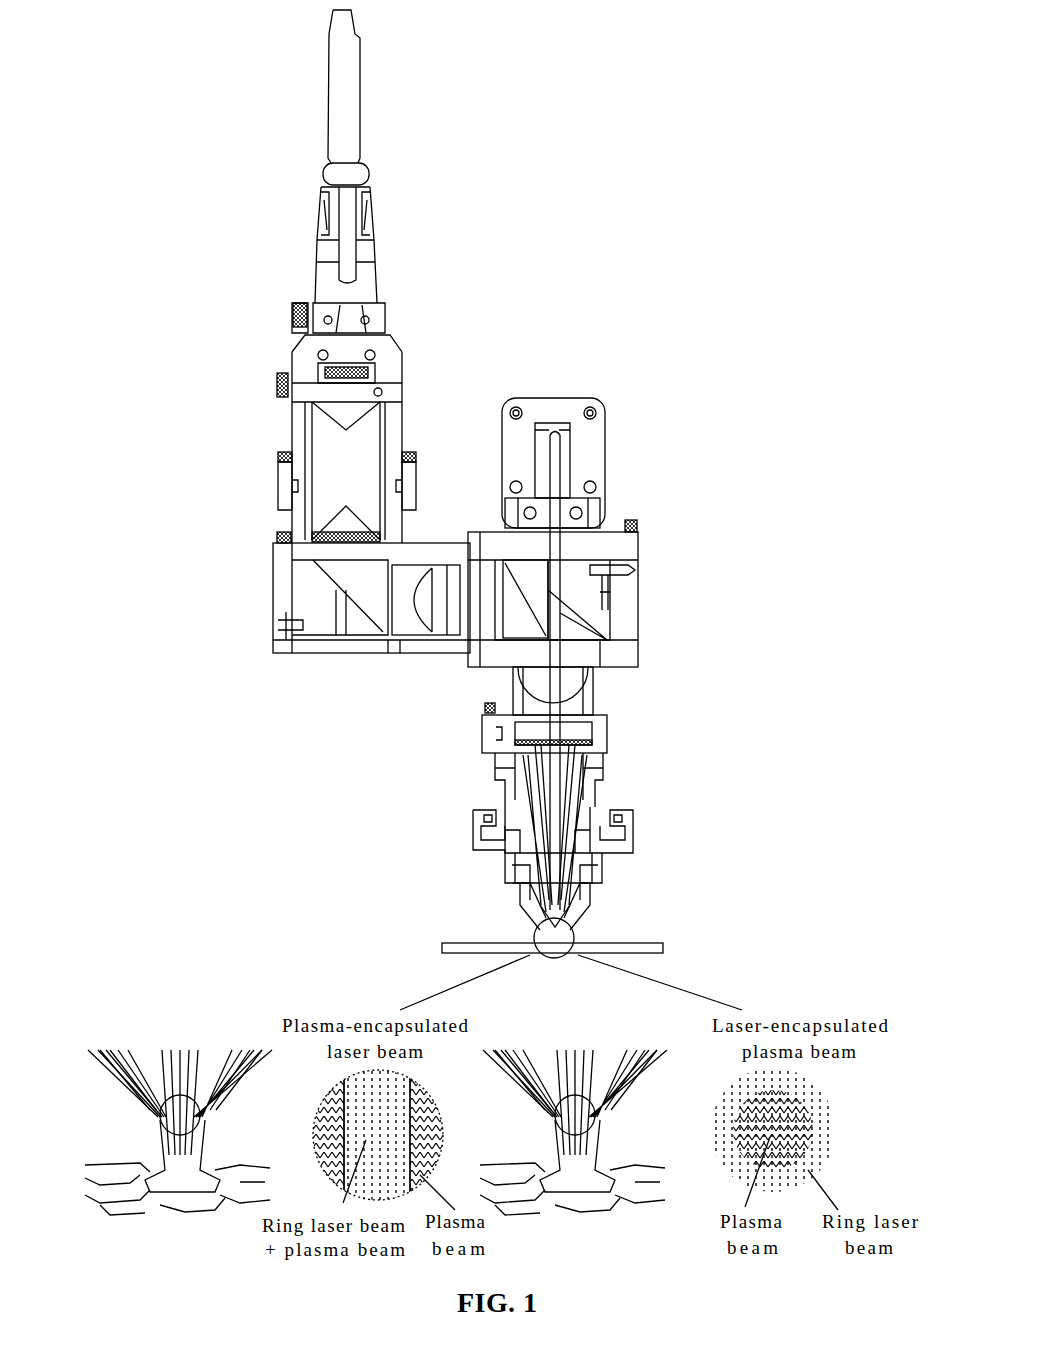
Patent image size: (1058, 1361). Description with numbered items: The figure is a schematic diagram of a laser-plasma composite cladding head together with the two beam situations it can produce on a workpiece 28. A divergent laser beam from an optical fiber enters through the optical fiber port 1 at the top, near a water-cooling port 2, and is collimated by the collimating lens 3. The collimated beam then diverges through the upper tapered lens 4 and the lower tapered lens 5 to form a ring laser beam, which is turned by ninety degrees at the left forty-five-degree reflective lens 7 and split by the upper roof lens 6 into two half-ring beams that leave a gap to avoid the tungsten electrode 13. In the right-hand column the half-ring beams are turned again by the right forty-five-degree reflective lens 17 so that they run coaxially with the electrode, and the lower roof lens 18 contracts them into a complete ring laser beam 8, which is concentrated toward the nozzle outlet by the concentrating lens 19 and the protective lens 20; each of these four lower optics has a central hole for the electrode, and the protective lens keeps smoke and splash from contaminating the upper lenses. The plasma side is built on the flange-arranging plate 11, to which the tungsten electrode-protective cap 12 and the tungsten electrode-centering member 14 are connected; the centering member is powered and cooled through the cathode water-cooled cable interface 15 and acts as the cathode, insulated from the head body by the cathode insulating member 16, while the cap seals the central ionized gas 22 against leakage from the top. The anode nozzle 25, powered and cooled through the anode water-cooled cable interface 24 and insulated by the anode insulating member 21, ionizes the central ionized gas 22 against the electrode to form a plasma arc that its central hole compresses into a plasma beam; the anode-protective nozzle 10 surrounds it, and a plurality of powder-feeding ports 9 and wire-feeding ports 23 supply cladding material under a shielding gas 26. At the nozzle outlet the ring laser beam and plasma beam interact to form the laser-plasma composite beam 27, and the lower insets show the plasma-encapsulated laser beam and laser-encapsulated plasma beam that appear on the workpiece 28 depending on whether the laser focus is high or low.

The optical fiber port 1 is at (320, 215).
The water-cooling port 2 is at (293, 306).
The collimating lens 3 is at (336, 356).
The upper tapered lens 4 is at (346, 413).
The lower tapered lens 5 is at (342, 530).
The upper roof lens 6 is at (406, 583).
The left 45° reflective lens 7 is at (316, 616).
The ring laser beam 8 is at (538, 776).
The powder-feeding port 9 is at (518, 800).
The anode-protective nozzle 10 is at (550, 918).
The flange-arranging plate 11 is at (552, 412).
The tungsten electrode-protective cap 12 is at (564, 436).
The tungsten electrode 13 is at (552, 476).
The tungsten electrode-centering member 14 is at (575, 513).
The cathode water-cooled cable interface 15 is at (600, 548).
The cathode insulating member 16 is at (626, 563).
The right 45° reflective lens 17 is at (586, 598).
The lower roof lens 18 is at (562, 685).
The concentrating lens 19 is at (605, 743).
The protective lens 20 is at (588, 783).
The anode insulating member 21 is at (570, 810).
The central ionized gas 22 is at (620, 815).
The wire-feeding port 23 is at (607, 826).
The anode water-cooled cable interface 24 is at (617, 843).
The anode nozzle 25 is at (598, 878).
The shielding gas 26 is at (579, 895).
The laser-plasma composite beam 27 is at (573, 926).
The workpiece 28 is at (653, 946).